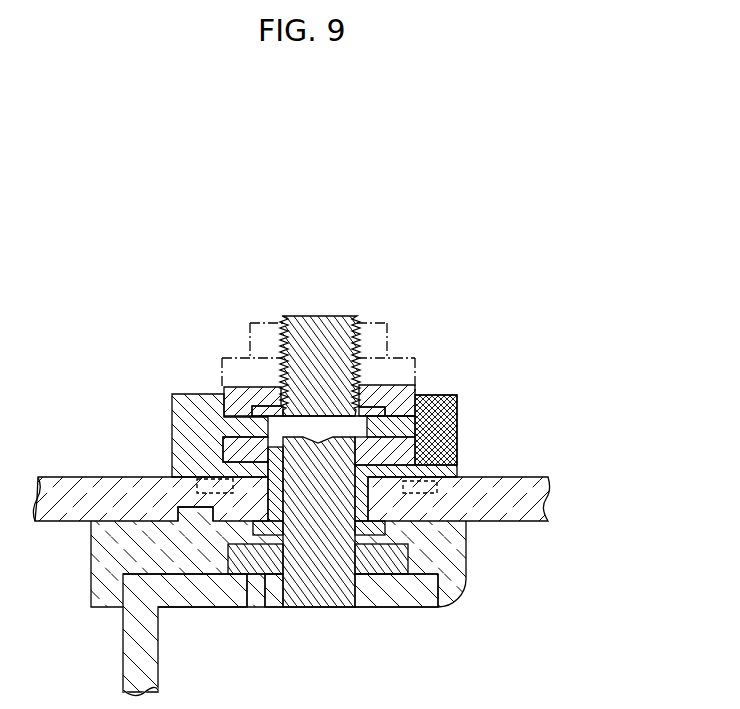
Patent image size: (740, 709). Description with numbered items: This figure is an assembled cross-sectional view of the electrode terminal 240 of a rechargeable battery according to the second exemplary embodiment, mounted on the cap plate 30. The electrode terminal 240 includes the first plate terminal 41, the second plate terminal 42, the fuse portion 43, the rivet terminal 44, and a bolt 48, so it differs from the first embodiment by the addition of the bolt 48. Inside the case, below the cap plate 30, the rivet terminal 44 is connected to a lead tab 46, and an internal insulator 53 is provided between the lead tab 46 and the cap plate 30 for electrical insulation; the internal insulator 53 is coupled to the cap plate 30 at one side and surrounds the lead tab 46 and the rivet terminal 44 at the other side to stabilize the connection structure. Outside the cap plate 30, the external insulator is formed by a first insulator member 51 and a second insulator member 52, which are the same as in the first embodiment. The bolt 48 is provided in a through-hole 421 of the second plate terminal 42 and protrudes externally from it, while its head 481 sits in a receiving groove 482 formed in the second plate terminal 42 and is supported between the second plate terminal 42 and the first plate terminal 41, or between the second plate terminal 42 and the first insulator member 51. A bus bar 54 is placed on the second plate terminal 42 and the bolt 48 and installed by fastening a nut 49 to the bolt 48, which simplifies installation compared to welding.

The electrode terminal 240 is at (436, 230).
The cap plate 30 is at (525, 510).
The first plate terminal 41 is at (425, 453).
The second plate terminal 42 is at (223, 387).
The through-hole 421 is at (387, 323).
The fuse portion 43 is at (410, 425).
The rivet terminal 44 is at (324, 583).
The lead tab 46 is at (140, 668).
The bolt 48 is at (318, 325).
The head 481 is at (430, 398).
The receiving groove 482 is at (380, 387).
The nut 49 is at (251, 322).
The first insulator member 51 is at (148, 407).
The second insulator member 52 is at (469, 397).
The internal insulator 53 is at (105, 571).
The bus bar 54 is at (222, 357).